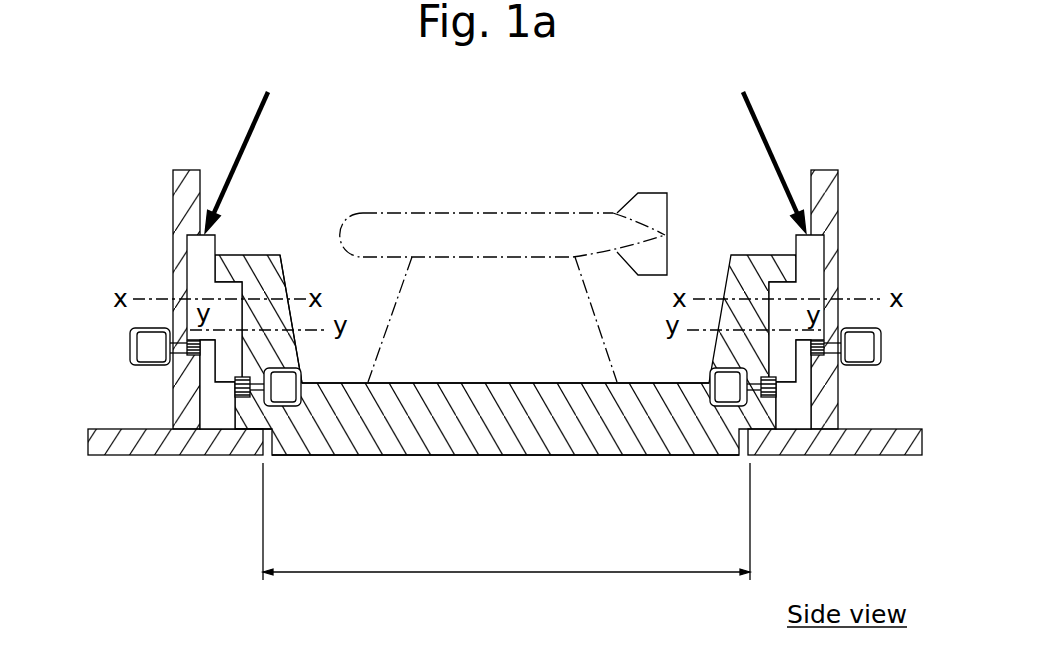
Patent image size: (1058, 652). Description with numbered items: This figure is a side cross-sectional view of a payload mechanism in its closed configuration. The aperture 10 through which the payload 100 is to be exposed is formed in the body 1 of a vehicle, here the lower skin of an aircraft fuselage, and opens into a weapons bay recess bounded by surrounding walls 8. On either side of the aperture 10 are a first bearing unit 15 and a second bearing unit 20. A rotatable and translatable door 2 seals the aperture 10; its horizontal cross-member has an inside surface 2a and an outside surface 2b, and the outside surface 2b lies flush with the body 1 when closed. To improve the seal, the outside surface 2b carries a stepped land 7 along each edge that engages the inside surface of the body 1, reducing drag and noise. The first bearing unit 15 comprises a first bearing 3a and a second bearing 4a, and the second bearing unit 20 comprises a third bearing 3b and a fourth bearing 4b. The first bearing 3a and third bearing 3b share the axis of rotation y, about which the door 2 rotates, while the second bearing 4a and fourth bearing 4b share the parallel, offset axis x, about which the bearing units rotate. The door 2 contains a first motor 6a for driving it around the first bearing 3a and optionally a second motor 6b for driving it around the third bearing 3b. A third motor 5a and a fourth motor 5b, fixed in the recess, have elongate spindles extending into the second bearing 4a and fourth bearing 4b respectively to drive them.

The body 1 is at (170, 458).
The door 2 is at (264, 252).
The inside surface 2a is at (356, 382).
The outside surface 2b is at (488, 455).
The first bearing 3a is at (787, 368).
The third bearing 3b is at (232, 346).
The second bearing 4a is at (812, 256).
The fourth bearing 4b is at (200, 263).
The third motor 5a is at (863, 345).
The fourth motor 5b is at (152, 347).
The first motor 6a is at (727, 395).
The second motor 6b is at (285, 392).
The stepped land 7 is at (250, 430).
The wall 8 is at (187, 203).
The aperture 10 is at (518, 574).
The first bearing unit 15 is at (769, 147).
The second bearing unit 20 is at (248, 147).
The payload 100 is at (485, 200).